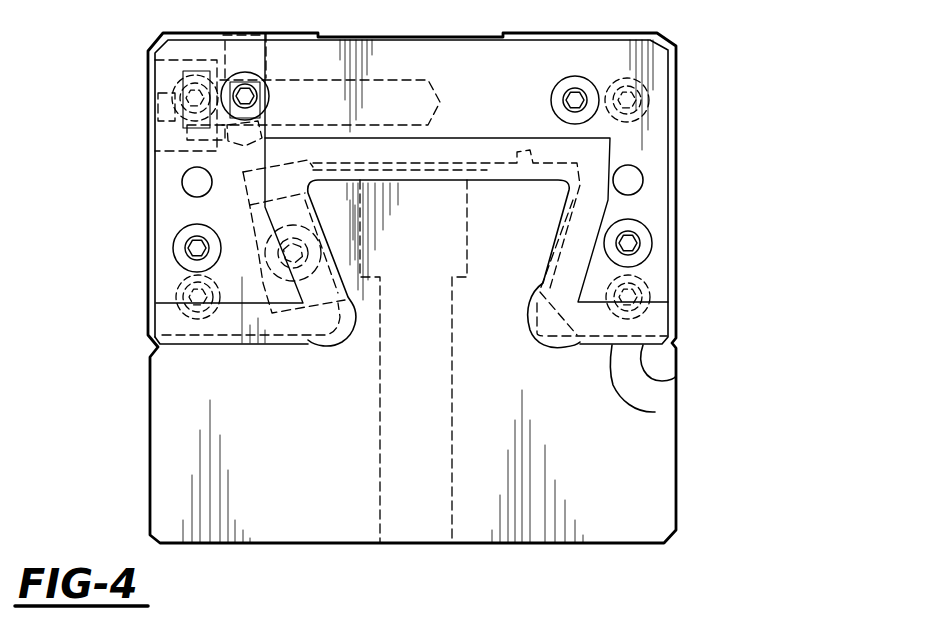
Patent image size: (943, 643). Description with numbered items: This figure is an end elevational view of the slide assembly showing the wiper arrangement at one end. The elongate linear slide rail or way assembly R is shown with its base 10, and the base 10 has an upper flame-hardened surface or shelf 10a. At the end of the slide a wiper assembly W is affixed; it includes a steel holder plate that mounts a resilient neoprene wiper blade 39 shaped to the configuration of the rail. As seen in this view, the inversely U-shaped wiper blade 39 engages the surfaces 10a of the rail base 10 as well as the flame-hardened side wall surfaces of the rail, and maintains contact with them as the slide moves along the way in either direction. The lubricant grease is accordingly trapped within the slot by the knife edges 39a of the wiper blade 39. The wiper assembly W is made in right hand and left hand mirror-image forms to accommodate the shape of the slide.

The linear slide rail or way assembly R is at (699, 509).
The wiper assembly W is at (682, 134).
The base 10 is at (603, 481).
The upper flame-hardened surface or shelf 10a is at (667, 380).
The wiper blade 39 is at (580, 219).
The knife edges 39a is at (655, 412).